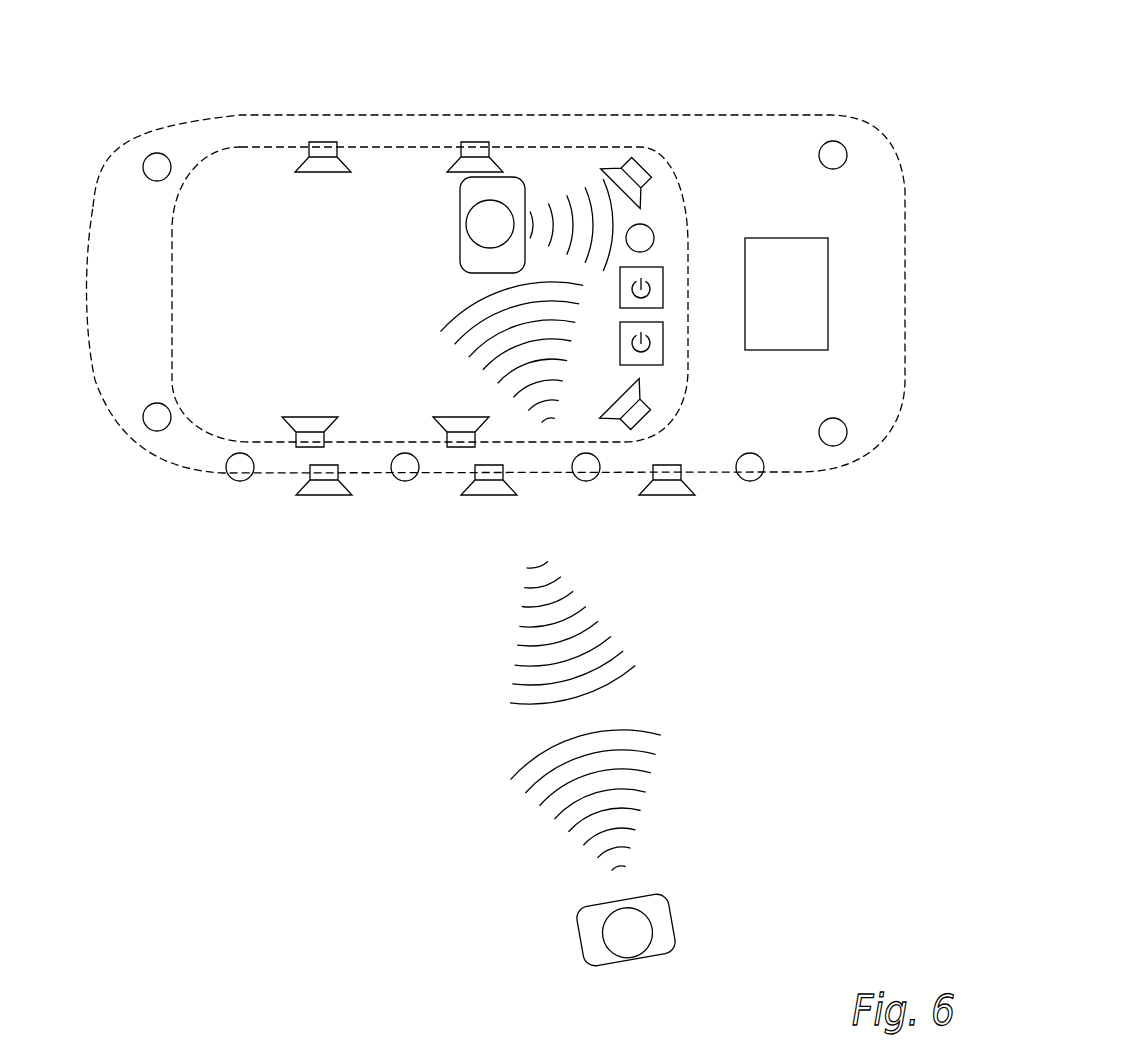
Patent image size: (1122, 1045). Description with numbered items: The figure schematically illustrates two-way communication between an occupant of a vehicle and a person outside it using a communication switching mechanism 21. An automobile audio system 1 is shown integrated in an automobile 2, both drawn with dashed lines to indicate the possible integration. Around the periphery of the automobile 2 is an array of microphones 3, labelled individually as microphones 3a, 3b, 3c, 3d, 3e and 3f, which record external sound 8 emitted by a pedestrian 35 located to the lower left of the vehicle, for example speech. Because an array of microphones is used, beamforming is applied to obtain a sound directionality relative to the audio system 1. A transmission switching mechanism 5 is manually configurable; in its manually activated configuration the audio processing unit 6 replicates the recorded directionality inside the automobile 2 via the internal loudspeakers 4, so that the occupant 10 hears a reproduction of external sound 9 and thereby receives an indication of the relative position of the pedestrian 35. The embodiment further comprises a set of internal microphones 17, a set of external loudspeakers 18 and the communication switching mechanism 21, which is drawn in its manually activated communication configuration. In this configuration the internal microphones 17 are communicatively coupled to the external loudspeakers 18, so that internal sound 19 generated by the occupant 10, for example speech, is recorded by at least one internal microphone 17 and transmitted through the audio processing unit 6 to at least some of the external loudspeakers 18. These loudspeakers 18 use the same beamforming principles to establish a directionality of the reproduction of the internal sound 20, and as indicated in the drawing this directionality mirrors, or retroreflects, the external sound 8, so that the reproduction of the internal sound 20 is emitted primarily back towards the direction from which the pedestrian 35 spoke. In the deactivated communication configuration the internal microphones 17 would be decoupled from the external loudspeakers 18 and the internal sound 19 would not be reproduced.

The automobile audio system 1 is at (863, 48).
The automobile 2 is at (250, 114).
The microphone 3 is at (150, 168).
The microphone 3a is at (138, 418).
The microphone 3b is at (253, 480).
The microphone 3c is at (418, 481).
The microphone 3d is at (599, 481).
The microphone 3e is at (763, 481).
The microphone 3f is at (853, 433).
The internal loudspeaker 4 is at (323, 173).
The transmission switching mechanism 5 is at (663, 288).
The audio processing unit 6 is at (784, 238).
The external sound 8 is at (703, 827).
The reproduction of external sound 9 is at (393, 314).
The occupant 10 is at (460, 224).
The internal microphone 17 is at (647, 227).
The external loudspeaker 18 is at (313, 497).
The internal sound 19 is at (559, 165).
The reproduction of the internal sound 20 is at (693, 634).
The communication switching mechanism 21 is at (663, 342).
The pedestrian 35 is at (578, 937).